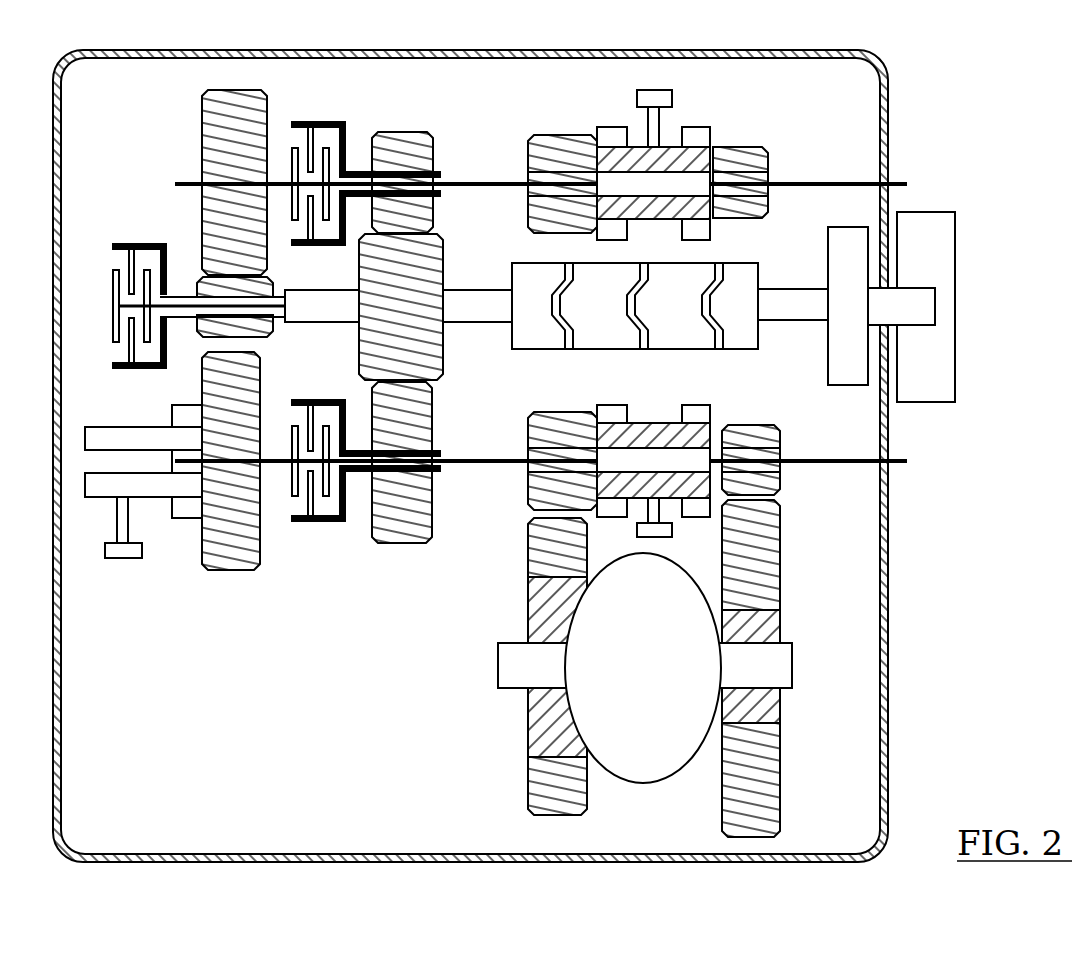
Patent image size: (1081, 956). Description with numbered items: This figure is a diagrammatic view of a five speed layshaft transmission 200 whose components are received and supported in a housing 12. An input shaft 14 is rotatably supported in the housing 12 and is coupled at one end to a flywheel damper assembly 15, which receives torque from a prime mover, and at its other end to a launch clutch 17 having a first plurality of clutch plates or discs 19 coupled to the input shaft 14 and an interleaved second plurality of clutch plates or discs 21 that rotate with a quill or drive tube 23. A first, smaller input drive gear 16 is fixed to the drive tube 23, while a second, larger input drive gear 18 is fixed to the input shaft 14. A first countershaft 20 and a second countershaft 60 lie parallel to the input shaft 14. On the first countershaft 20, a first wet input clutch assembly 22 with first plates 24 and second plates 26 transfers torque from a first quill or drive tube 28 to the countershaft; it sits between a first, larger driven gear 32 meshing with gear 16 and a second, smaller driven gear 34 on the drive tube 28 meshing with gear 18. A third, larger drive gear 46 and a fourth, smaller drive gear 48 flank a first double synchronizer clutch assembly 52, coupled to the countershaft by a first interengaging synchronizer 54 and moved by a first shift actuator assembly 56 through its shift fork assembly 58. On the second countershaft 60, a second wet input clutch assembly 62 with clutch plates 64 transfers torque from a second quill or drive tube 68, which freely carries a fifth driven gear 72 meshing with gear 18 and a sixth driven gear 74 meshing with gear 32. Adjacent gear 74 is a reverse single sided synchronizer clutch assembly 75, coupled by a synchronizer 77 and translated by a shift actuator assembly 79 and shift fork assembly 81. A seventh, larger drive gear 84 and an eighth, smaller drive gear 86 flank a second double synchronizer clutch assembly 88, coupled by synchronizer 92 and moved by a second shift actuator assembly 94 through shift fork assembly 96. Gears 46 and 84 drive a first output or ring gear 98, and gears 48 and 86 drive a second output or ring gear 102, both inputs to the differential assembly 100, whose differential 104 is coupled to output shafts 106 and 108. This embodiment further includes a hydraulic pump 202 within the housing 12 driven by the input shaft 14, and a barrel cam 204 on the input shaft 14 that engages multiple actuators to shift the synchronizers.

The housing 12 is at (888, 88).
The input shaft 14 is at (321, 316).
The flywheel damper assembly 15 is at (930, 212).
The first, smaller input drive gear 16 is at (276, 333).
The launch clutch 17 is at (113, 287).
The second, larger input drive gear 18 is at (444, 346).
The first plurality of clutch plates or discs 19 is at (113, 284).
The first layshaft or countershaft 20 is at (843, 183).
The second plurality of clutch plates or discs 21 is at (126, 363).
The first wet input clutch assembly 22 is at (382, 159).
The quill or drive tube 23 is at (186, 296).
The first plurality of clutch plates or discs 24 is at (332, 172).
The second plurality of clutch plates or discs 26 is at (295, 148).
The first quill or drive tube 28 is at (398, 176).
The first, larger driven gear 32 is at (204, 104).
The second, smaller driven gear 34 is at (416, 132).
The third, larger drive gear 46 is at (533, 136).
The fourth, smaller drive gear 48 is at (752, 147).
The first double synchronizer clutch assembly 52 is at (666, 151).
The first interengaging synchronizer 54 is at (688, 172).
The first shift actuator assembly 56 is at (636, 97).
The output member and shift fork assembly 58 is at (648, 125).
The second layshaft or countershaft 60 is at (853, 463).
The second wet input clutch assembly 62 is at (350, 485).
The first plurality of clutch plates or discs 64 is at (294, 496).
The second quill or drive tube 68 is at (365, 450).
The fifth driven gear 72 is at (397, 544).
The sixth driven gear 74 is at (203, 556).
The reverse dog clutch or single sided synchronizer clutch assembly 75 is at (132, 511).
The synchronizer 77 is at (188, 458).
The shift actuator assembly 79 is at (120, 574).
The output member and shift fork assembly 81 is at (133, 532).
The seventh, larger drive gear 84 is at (556, 412).
The eighth, smaller drive gear 86 is at (752, 425).
The second double synchronizer clutch assembly 88 is at (640, 337).
The synchronizer 92 is at (655, 442).
The second shift actuator assembly 94 is at (651, 470).
The output member and shift fork assembly 96 is at (637, 530).
The first output or ring gear 98 is at (528, 722).
The differential assembly 100 is at (645, 670).
The second output or ring gear 102 is at (781, 712).
The differential 104 is at (628, 784).
The axle or output shaft 106 is at (498, 665).
The axle or output shaft 108 is at (792, 670).
The transmission 200 is at (562, 454).
The hydraulic pump 202 is at (828, 252).
The barrel cam 204 is at (520, 350).